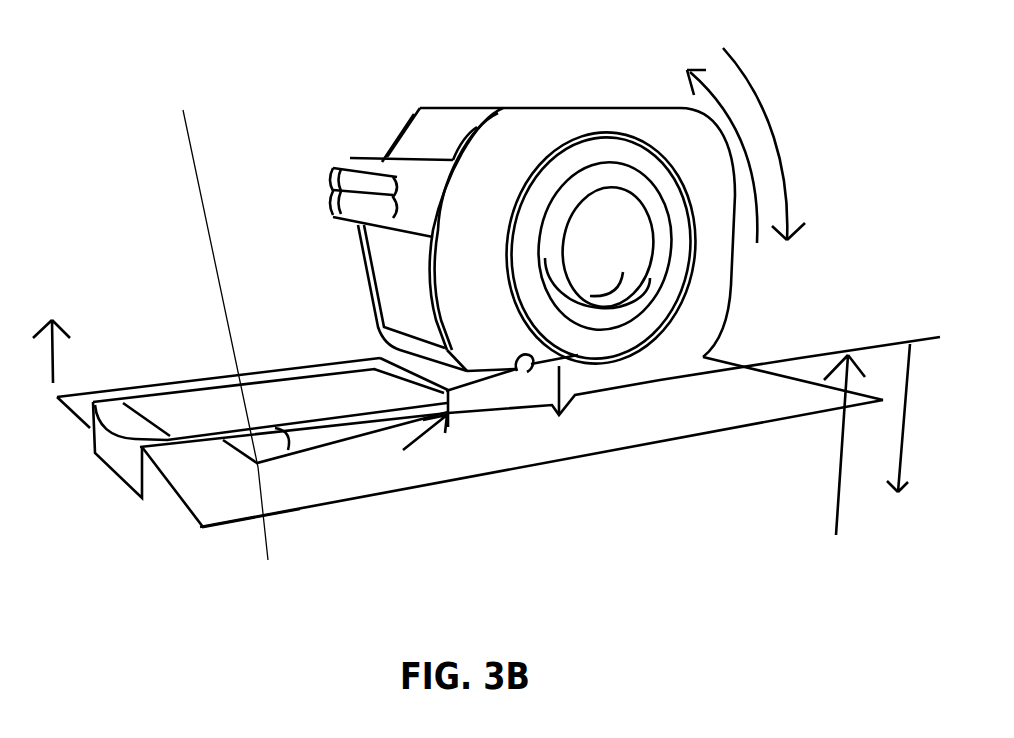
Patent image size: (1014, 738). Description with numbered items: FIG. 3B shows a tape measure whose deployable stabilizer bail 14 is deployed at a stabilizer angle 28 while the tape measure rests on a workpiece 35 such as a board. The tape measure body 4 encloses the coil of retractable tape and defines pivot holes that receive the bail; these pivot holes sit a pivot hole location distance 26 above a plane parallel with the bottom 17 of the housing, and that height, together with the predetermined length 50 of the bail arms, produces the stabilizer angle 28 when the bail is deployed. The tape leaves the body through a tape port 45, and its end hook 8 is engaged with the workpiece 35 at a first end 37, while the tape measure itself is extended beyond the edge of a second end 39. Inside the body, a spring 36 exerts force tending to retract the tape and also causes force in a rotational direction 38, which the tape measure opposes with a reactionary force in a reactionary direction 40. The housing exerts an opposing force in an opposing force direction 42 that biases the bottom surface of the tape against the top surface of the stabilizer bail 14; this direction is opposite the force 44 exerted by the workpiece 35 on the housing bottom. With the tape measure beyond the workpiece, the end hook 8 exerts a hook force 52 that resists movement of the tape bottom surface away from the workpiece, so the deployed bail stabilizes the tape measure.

The tape measure body 4 is at (577, 108).
The hook 8 is at (143, 465).
The deployable stabilizer bail 14 is at (268, 447).
The bottom of housing 17 is at (637, 390).
The pivot hole location distance 26 is at (568, 392).
The stabilizer angle 28 is at (268, 560).
The workpiece 35 is at (580, 460).
The spring 36 is at (608, 246).
The first end 37 is at (183, 510).
The rotational direction 38 is at (693, 144).
The second end 39 is at (730, 357).
The reactionary direction 40 is at (764, 164).
The opposing force direction 42 is at (897, 434).
The force exerted by workpiece 44 is at (841, 464).
The tape port 45 is at (395, 443).
The predetermined length 50 is at (268, 560).
The hook force 52 is at (47, 329).